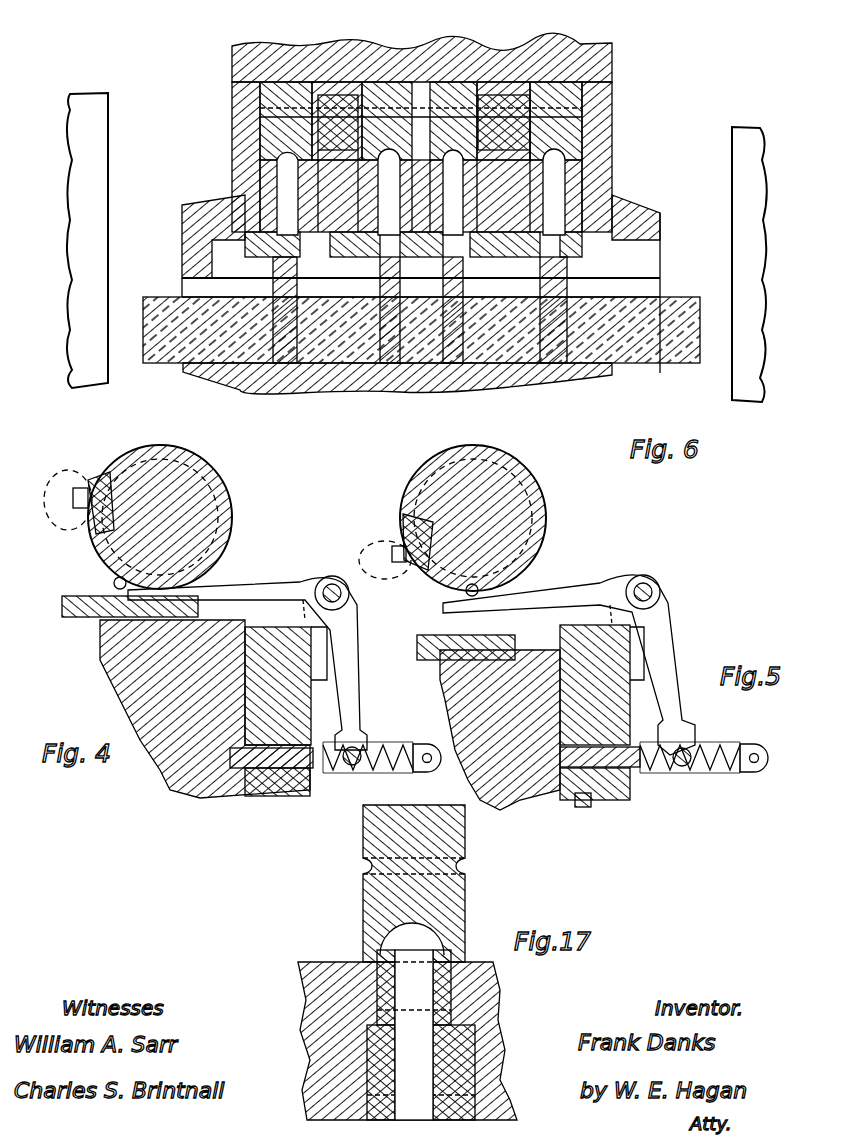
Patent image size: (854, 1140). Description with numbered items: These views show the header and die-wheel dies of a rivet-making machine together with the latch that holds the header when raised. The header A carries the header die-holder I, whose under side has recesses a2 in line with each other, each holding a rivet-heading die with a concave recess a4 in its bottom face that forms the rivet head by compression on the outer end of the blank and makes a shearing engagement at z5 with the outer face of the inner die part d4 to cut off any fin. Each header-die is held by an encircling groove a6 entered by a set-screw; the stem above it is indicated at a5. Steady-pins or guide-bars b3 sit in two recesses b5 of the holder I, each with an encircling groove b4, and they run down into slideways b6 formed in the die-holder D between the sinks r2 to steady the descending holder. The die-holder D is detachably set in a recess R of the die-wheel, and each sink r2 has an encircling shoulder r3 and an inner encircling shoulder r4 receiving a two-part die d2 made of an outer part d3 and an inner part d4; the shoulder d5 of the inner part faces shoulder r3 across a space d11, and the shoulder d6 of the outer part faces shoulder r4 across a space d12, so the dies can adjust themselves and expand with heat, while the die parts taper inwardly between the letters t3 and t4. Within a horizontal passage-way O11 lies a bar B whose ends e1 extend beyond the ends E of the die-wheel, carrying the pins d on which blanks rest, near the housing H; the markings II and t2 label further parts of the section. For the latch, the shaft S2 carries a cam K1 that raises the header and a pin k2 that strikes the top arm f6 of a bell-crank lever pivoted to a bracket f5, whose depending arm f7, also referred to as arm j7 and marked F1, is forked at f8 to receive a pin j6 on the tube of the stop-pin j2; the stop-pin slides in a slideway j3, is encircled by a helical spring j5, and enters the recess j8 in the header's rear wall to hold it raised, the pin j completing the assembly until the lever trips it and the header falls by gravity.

In FIG. 6, the side plate H is at (100, 315).
In FIG. 6, the recess a2 is at (422, 132).
In FIG. 6, the steady-pin or guide-bar b3 is at (421, 211).
In FIG. 6, the encircling groove b4 is at (360, 120).
In FIG. 6, the recess b5 is at (322, 110).
In FIG. 6, the header A is at (445, 24).
In FIG. 4, the header A is at (194, 697).
In FIG. 5, the header A is at (530, 717).
In FIG. 6, the concave recess a4 is at (388, 154).
In FIG. 17, the concave recess a4 is at (412, 939).
In FIG. 6, the stem a5 is at (655, 108).
In FIG. 17, the stem a5 is at (465, 836).
In FIG. 17, the encircling groove a6 is at (460, 866).
In FIG. 6, the pin d is at (421, 192).
In FIG. 6, the encircling shoulder d5 is at (372, 185).
In FIG. 17, the encircling shoulder d5 is at (421, 1072).
In FIG. 6, the shoulder d6 is at (407, 129).
In FIG. 17, the shoulder d6 is at (414, 1035).
In FIG. 6, the shearing engagement z5 is at (580, 150).
In FIG. 17, the shearing engagement z5 is at (377, 963).
In FIG. 6, the header die-holder I is at (600, 118).
In FIG. 6, the section line II is at (596, 176).
In FIG. 17, the section line II is at (518, 1005).
In FIG. 6, the die-holder D is at (182, 213).
In FIG. 6, the recess R is at (235, 200).
In FIG. 6, the end of the die-wheel E is at (182, 243).
In FIG. 6, the horizontal passage-way O11 is at (182, 290).
In FIG. 6, the bar B is at (421, 345).
In FIG. 6, the end of bar e1 is at (143, 312).
In FIG. 6, the slideway b6 is at (313, 256).
In FIG. 6, the tongue t2 is at (471, 245).
In FIG. 6, the taper limit t4 is at (415, 257).
In FIG. 17, the taper limit t4 is at (458, 1008).
In FIG. 4, the shaft S2 is at (160, 517).
In FIG. 5, the shaft S2 is at (473, 518).
In FIG. 4, the cam K1 is at (75, 513).
In FIG. 5, the cam K1 is at (396, 536).
In FIG. 4, the pin k2 is at (114, 583).
In FIG. 5, the pin k2 is at (460, 598).
In FIG. 4, the top arm f6 is at (246, 592).
In FIG. 5, the top arm f6 is at (557, 590).
In FIG. 4, the lever arm F1 is at (340, 655).
In FIG. 5, the lever arm F1 is at (662, 645).
In FIG. 4, the bracket f5 is at (318, 672).
In FIG. 5, the bracket f5 is at (637, 672).
In FIG. 4, the depending arm f7 is at (350, 702).
In FIG. 5, the depending arm f7 is at (672, 697).
In FIG. 4, the forked end f8 is at (375, 745).
In FIG. 5, the forked end f8 is at (700, 742).
In FIG. 4, the slideway j3 is at (258, 758).
In FIG. 5, the slideway j3 is at (579, 757).
In FIG. 4, the pin j is at (322, 808).
In FIG. 4, the depending arm j7 is at (205, 800).
In FIG. 4, the latch or stop-pin j2 is at (259, 811).
In FIG. 5, the latch or stop-pin j2 is at (632, 775).
In FIG. 4, the helical spring j5 is at (385, 810).
In FIG. 5, the helical spring j5 is at (705, 805).
In FIG. 5, the pin j6 is at (680, 778).
In FIG. 5, the recess j8 is at (580, 800).
In FIG. 17, the die d2 is at (300, 1030).
In FIG. 17, the outer die part d3 is at (470, 985).
In FIG. 17, the taper limit t3 is at (500, 996).
In FIG. 17, the inner encircling shoulder r4 is at (408, 1000).
In FIG. 17, the space d12 is at (378, 1000).
In FIG. 17, the sink r2 is at (368, 1065).
In FIG. 17, the encircling shoulder r3 is at (414, 1080).
In FIG. 17, the inner die part d4 is at (460, 1062).
In FIG. 17, the space d11 is at (480, 1092).